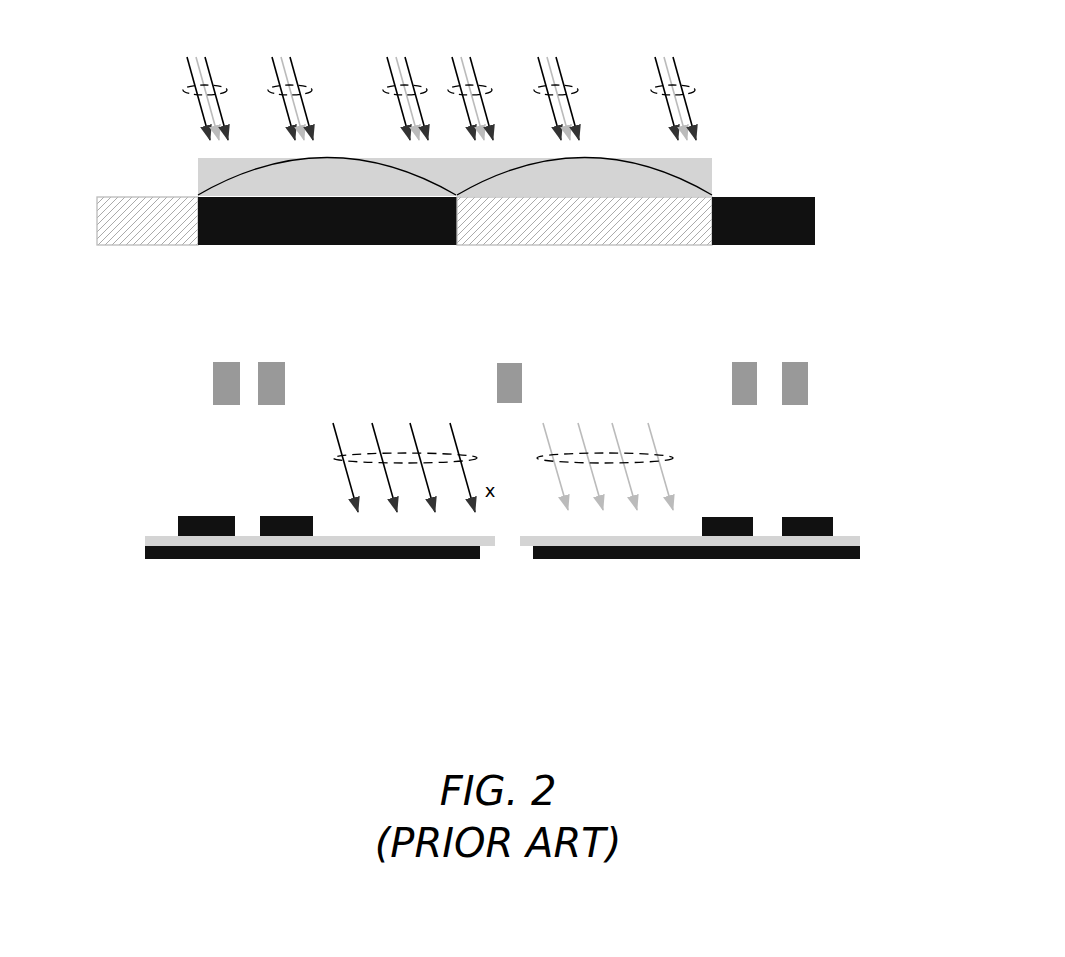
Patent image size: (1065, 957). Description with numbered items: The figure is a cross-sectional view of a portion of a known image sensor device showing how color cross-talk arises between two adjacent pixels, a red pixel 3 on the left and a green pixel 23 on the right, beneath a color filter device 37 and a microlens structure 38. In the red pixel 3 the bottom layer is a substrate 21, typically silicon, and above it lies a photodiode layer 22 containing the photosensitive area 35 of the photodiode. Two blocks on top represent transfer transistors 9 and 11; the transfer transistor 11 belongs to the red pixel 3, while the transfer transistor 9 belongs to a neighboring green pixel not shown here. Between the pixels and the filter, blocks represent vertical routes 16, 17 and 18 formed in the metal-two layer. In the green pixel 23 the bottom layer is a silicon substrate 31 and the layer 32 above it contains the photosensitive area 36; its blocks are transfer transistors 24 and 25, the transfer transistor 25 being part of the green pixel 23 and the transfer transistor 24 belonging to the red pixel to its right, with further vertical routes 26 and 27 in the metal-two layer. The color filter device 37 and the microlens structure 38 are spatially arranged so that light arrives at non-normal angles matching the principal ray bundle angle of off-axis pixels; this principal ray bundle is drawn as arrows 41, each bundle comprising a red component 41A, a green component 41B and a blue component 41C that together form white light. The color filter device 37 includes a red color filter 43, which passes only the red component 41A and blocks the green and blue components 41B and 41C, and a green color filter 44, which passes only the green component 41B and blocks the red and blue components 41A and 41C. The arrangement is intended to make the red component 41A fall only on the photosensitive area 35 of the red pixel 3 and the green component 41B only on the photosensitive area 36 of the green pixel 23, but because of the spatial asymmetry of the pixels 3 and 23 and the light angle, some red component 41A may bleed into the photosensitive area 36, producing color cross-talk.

The red pixel 3 is at (262, 550).
The green pixel 23 is at (726, 555).
The transfer transistor 9 is at (205, 512).
The transfer transistor 11 is at (288, 512).
The vertical route 16 is at (510, 362).
The vertical route 17 is at (228, 360).
The vertical route 18 is at (273, 360).
The substrate 21 is at (142, 552).
The photodiode layer 22 is at (142, 540).
The transfer transistor 24 is at (812, 512).
The transfer transistor 25 is at (732, 512).
The vertical route 26 is at (745, 360).
The vertical route 27 is at (795, 360).
The silicon substrate 31 is at (864, 553).
The photodiode layer 32 is at (864, 540).
The photosensitive area 35 is at (313, 560).
The photosensitive area 36 is at (695, 572).
The color filter device 37 is at (799, 198).
The microlens structure 38 is at (718, 187).
The principle ray bundle 41 is at (184, 91).
The red component 41A is at (190, 72).
The green component 41B is at (197, 62).
The blue component 41C is at (208, 68).
The red color filter 43 is at (200, 247).
The green color filter 44 is at (459, 247).